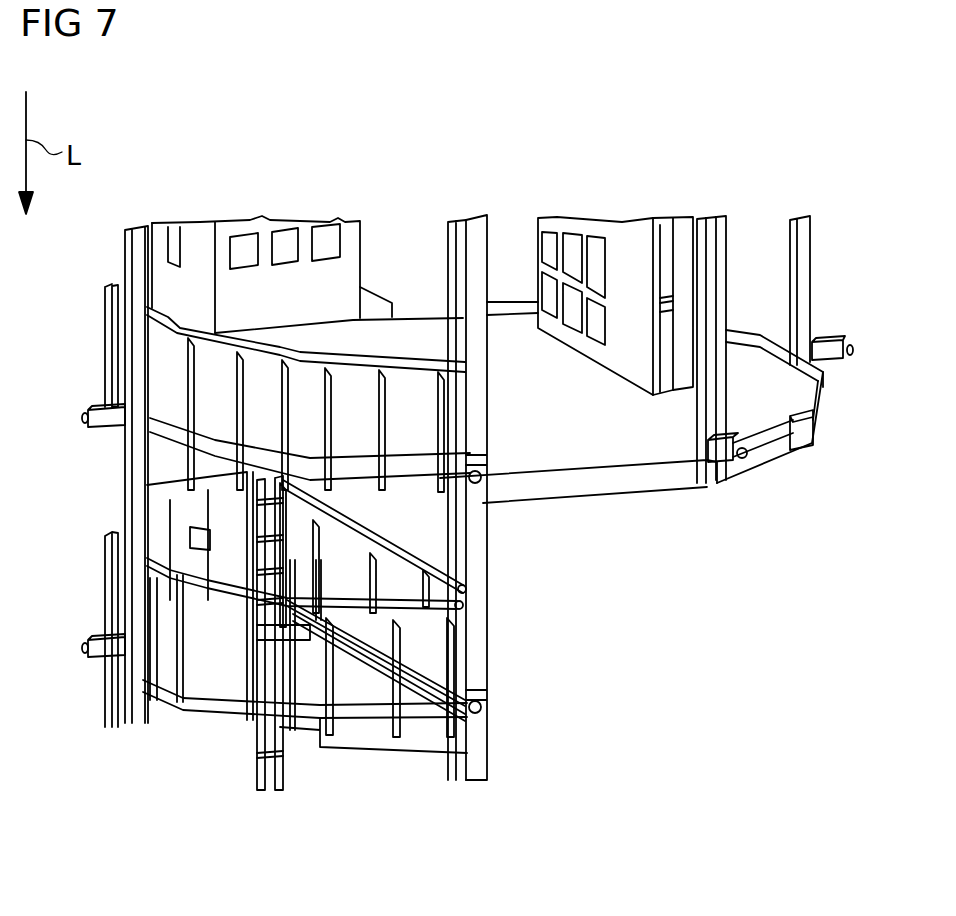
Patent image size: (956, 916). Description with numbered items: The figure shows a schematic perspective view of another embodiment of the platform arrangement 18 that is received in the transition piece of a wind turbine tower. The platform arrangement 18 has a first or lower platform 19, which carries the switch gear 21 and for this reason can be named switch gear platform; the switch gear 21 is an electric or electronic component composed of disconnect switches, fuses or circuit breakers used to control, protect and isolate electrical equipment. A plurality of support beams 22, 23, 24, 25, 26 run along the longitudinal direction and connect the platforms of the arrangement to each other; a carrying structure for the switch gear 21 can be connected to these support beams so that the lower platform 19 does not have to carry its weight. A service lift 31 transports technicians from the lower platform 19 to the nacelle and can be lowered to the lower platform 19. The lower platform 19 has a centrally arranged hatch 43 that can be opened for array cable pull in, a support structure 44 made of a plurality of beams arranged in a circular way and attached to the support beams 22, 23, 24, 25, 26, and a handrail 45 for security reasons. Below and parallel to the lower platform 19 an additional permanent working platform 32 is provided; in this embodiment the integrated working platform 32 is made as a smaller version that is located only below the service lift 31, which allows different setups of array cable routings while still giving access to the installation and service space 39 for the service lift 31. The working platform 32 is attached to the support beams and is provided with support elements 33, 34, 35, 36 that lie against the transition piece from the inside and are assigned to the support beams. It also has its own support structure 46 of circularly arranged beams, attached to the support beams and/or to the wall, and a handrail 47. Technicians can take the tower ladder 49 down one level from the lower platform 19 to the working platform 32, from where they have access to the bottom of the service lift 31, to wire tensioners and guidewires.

The platform arrangement 18 is at (373, 152).
The lower platform 19 is at (781, 400).
The switch gear 21 is at (638, 230).
The support beam 22 is at (806, 222).
The support beam 23 is at (714, 226).
The support beam 24 is at (479, 250).
The support beam 25 is at (127, 238).
The support beam 26 is at (450, 222).
The service lift 31 is at (192, 228).
The working platform 32 is at (222, 697).
The support element 33 is at (851, 348).
The support element 34 is at (742, 461).
The support element 35 is at (483, 480).
The support element 36 is at (84, 418).
The installation and/or service space 39 is at (208, 657).
The hatch 43 is at (585, 447).
The support structure 44 is at (800, 455).
The handrail 45 is at (240, 412).
The support structure 46 is at (283, 782).
The handrail 47 is at (108, 553).
The tower ladder 49 is at (265, 790).